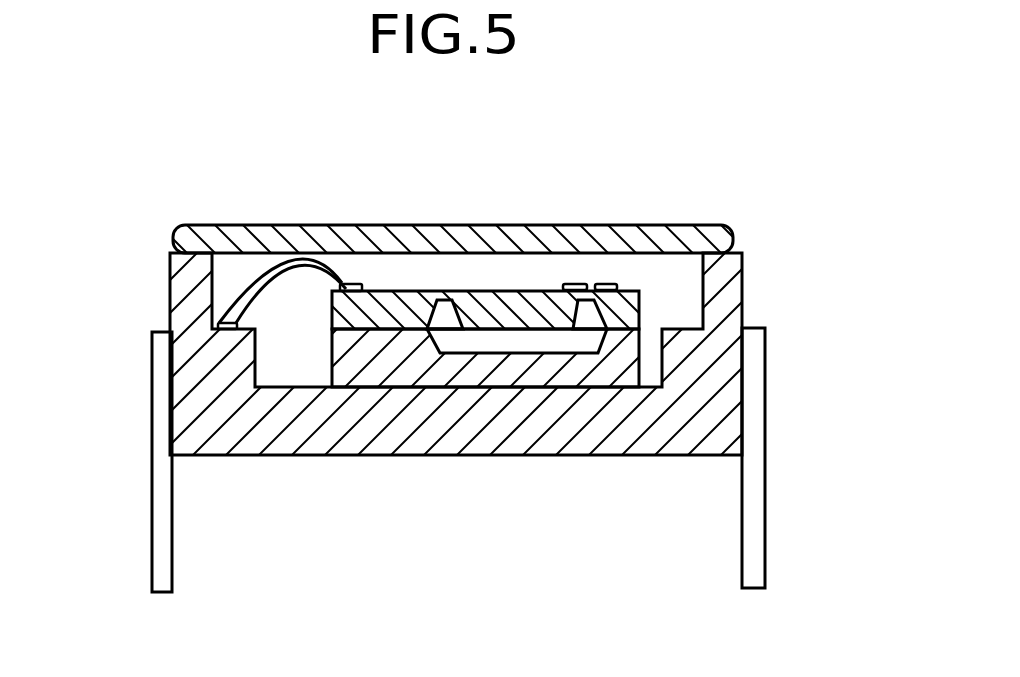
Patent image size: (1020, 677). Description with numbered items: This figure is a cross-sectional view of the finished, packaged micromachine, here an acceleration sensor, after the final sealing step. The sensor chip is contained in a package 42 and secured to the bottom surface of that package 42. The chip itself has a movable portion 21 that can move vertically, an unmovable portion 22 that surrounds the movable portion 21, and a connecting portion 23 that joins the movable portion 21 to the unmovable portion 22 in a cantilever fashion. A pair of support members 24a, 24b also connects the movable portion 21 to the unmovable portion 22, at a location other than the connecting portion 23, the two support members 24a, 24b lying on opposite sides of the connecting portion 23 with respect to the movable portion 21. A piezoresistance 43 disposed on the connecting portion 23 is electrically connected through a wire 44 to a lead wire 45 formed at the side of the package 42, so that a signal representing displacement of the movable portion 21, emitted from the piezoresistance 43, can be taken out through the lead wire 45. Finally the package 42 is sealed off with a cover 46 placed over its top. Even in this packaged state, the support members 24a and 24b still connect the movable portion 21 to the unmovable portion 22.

The movable portion 21 is at (510, 317).
The unmovable portion 22 is at (397, 293).
The connecting portion 23 is at (447, 292).
The support member 24a is at (597, 284).
The support member 24b is at (632, 214).
The package 42 is at (175, 270).
The piezoresistance 43 is at (764, 503).
The wire 44 is at (265, 283).
The lead wire 45 is at (153, 503).
The cover 46 is at (507, 232).